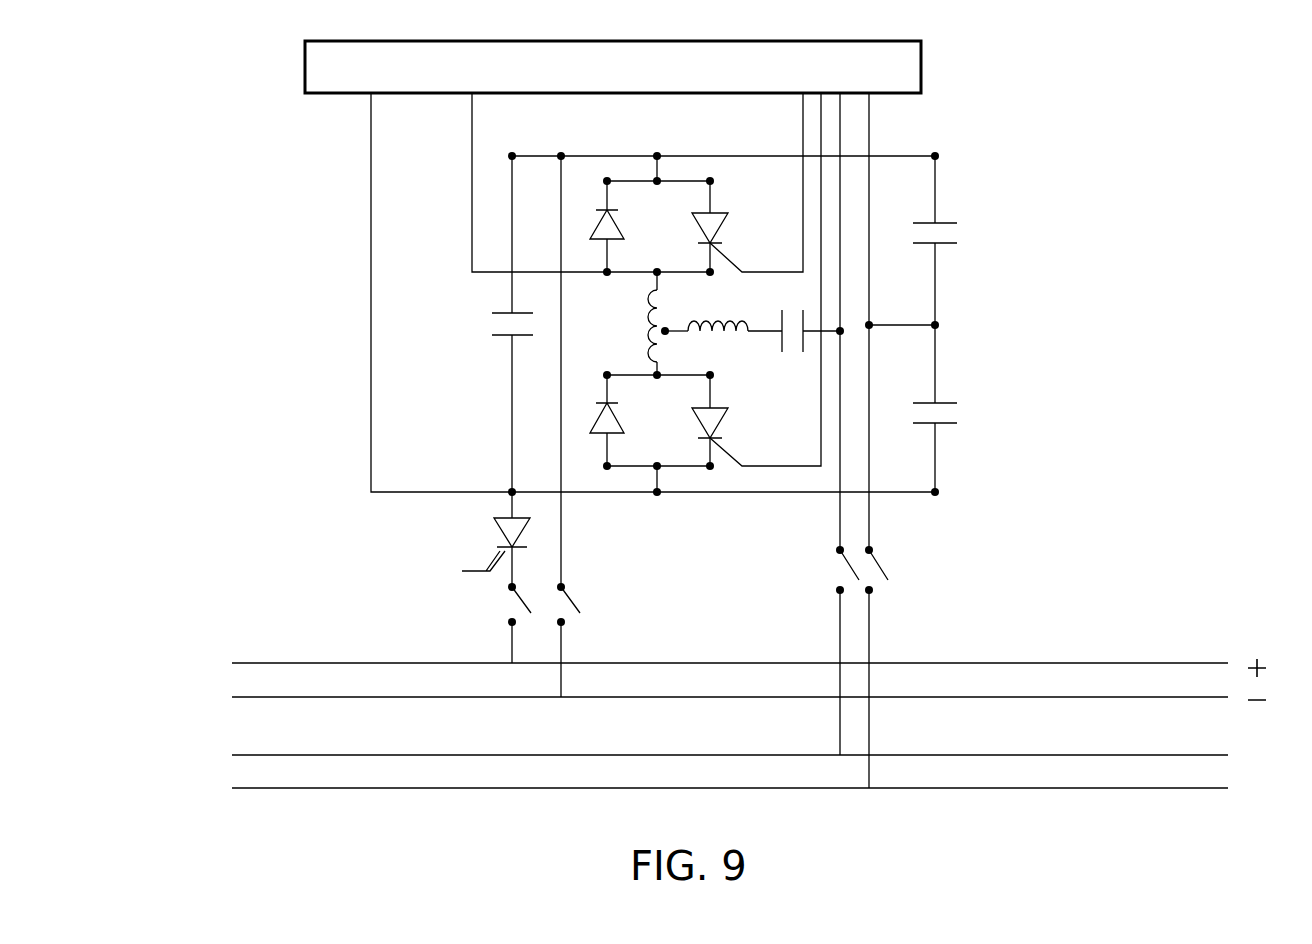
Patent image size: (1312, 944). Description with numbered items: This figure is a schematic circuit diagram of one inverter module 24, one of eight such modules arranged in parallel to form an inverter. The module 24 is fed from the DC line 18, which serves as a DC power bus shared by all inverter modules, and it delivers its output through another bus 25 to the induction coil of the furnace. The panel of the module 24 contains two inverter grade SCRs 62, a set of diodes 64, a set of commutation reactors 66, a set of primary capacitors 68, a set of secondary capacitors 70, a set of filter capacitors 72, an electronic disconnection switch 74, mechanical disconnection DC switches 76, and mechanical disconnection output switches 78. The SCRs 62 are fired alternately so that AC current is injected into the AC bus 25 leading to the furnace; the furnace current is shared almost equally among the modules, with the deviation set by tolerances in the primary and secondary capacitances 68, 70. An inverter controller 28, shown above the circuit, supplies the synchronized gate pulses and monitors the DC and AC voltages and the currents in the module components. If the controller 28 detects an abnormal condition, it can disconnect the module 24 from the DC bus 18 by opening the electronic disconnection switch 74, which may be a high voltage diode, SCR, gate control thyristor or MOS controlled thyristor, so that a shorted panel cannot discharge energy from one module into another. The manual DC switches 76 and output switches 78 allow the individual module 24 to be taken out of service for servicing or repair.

The inverter controller 28 is at (613, 67).
The inverter module 24 is at (335, 355).
The inverter grade SCR 62 is at (722, 228).
The diode 64 is at (596, 229).
The commutation reactor 66 is at (735, 318).
The primary capacitor 68 is at (800, 353).
The secondary capacitor 70 is at (953, 236).
The filter capacitor 72 is at (504, 323).
The electronic disconnection switch 74 is at (500, 530).
The mechanical disconnection DC switch 76 is at (523, 606).
The mechanical disconnection output switch 78 is at (840, 571).
The DC line 18 is at (238, 654).
The bus 25 is at (1226, 748).